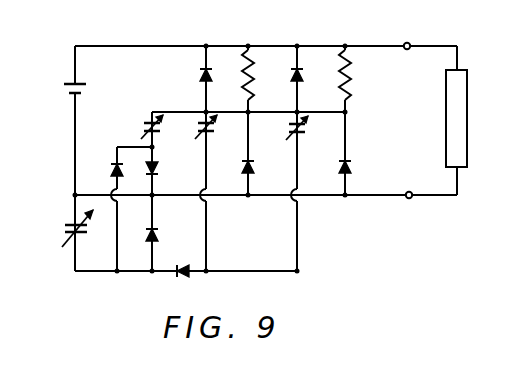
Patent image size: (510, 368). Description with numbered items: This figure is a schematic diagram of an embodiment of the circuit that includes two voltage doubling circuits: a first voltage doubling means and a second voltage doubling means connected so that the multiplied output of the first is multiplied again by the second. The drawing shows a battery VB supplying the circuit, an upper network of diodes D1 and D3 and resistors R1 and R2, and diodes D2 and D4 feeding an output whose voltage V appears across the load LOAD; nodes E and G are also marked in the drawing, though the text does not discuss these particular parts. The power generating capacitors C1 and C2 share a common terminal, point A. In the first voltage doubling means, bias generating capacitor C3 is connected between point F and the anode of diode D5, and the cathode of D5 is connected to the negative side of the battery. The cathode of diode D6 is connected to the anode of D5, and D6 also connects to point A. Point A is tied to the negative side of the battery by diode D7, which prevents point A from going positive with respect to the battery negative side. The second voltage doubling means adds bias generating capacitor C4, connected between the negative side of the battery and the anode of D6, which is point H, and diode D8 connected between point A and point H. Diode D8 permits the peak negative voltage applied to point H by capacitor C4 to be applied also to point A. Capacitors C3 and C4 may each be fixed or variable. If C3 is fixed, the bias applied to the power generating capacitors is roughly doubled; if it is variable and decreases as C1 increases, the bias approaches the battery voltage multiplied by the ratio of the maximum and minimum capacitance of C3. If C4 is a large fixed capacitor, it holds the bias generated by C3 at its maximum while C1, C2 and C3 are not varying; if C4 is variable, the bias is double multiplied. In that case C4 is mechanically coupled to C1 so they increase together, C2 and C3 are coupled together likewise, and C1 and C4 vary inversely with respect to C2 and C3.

The battery voltage source VB is at (70, 85).
The diode D1 is at (192, 79).
The diode D2 is at (261, 173).
The diode D3 is at (307, 79).
The diode D4 is at (357, 173).
The diode D5 is at (162, 174).
The diode D6 is at (105, 174).
The diode D7 is at (162, 240).
The diode D8 is at (194, 285).
The resistor R1 is at (258, 75).
The resistor R2 is at (355, 75).
The capacitor C1 is at (196, 129).
The capacitor C2 is at (287, 130).
The bias generating capacitor C3 is at (139, 128).
The bias generating capacitor C4 is at (67, 227).
The load LOAD is at (466, 81).
The output voltage V is at (506, 55).
The point F is at (251, 112).
The circuit node E is at (299, 111).
The circuit node G is at (154, 147).
The point A is at (238, 271).
The point H is at (117, 273).